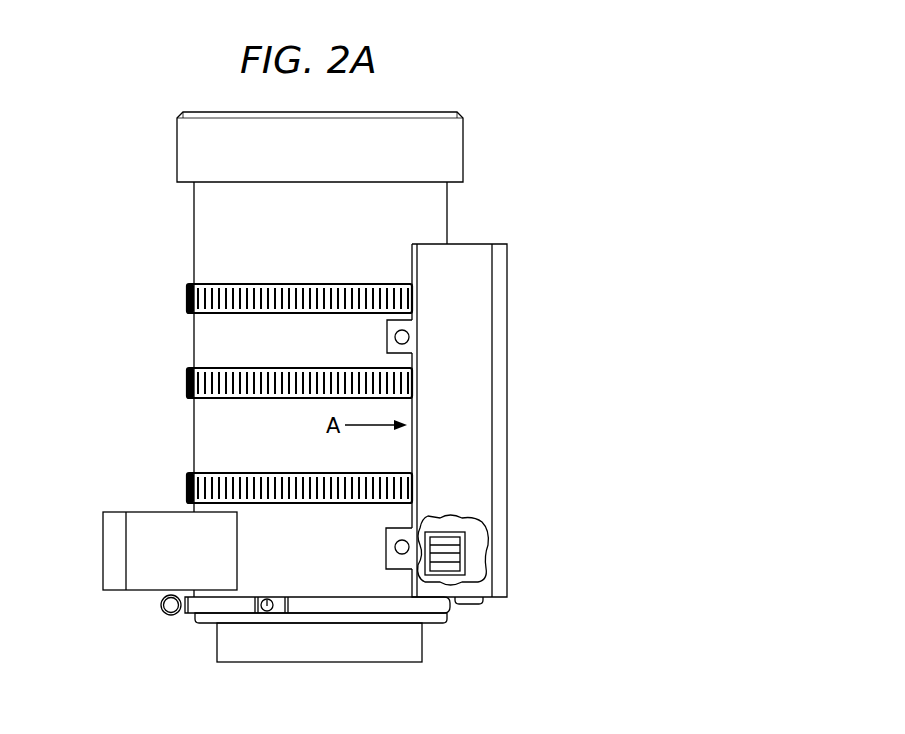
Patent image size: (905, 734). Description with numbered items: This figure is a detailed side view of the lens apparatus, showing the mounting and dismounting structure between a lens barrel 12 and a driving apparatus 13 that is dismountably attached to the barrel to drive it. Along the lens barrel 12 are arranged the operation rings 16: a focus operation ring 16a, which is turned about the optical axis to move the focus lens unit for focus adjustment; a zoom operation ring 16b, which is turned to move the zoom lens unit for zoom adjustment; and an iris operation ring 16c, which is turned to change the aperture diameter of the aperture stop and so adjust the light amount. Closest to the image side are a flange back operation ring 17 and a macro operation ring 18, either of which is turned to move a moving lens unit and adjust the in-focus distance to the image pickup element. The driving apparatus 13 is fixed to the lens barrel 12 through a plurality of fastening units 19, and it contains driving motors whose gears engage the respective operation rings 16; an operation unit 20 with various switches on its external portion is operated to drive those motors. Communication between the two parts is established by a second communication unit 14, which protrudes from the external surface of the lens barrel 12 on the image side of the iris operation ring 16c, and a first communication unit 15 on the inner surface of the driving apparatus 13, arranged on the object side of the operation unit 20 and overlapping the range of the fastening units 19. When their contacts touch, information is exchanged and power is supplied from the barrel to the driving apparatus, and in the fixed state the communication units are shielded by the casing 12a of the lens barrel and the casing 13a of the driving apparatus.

The lens barrel 12 is at (185, 235).
The casing of the lens barrel 12a is at (378, 583).
The driving apparatus 13 is at (485, 238).
The casing of the driving apparatus 13a is at (508, 432).
The second communication unit 14 is at (431, 580).
The first communication unit 15 is at (465, 552).
The operation rings 16 is at (227, 395).
The focus operation ring 16a is at (187, 297).
The zoom operation ring 16b is at (187, 383).
The iris operation ring 16c is at (253, 488).
The flange back operation ring 17 is at (170, 612).
The macro operation ring 18 is at (267, 613).
The fastening units 19 is at (408, 542).
The operation unit 20 is at (472, 605).